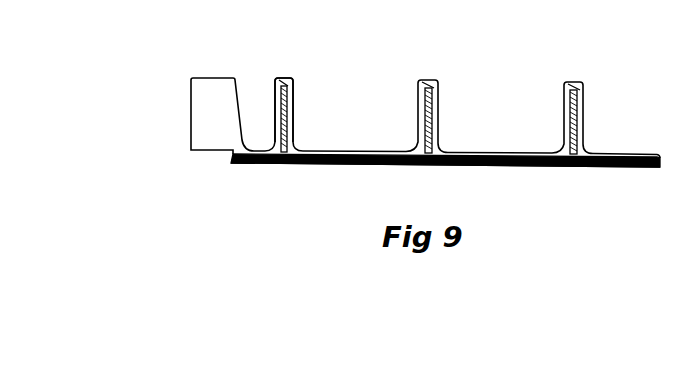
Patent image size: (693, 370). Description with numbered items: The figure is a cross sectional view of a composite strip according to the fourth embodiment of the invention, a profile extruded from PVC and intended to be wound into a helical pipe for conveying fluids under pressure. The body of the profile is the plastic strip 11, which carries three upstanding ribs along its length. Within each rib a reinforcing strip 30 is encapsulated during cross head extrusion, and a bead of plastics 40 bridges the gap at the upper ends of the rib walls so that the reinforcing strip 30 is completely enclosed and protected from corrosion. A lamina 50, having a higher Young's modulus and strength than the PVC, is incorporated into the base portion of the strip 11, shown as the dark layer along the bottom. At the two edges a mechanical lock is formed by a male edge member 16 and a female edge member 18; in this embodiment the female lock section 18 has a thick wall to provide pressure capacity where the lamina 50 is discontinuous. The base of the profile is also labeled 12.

The plastic strip 11 is at (520, 157).
The plate 12 is at (467, 165).
The male edge member 16 is at (630, 134).
The female edge member 18 is at (210, 98).
The reinforcing strip 30 is at (288, 122).
The bead of plastics 40 is at (288, 78).
The lamina 50 is at (550, 168).